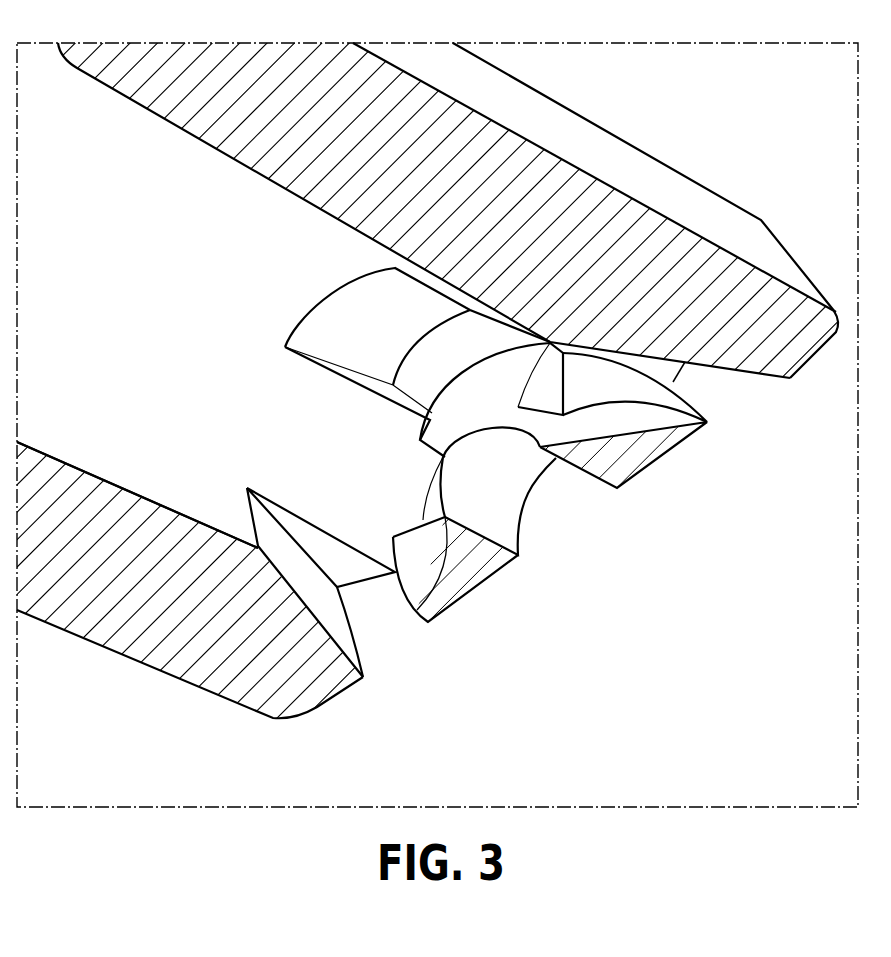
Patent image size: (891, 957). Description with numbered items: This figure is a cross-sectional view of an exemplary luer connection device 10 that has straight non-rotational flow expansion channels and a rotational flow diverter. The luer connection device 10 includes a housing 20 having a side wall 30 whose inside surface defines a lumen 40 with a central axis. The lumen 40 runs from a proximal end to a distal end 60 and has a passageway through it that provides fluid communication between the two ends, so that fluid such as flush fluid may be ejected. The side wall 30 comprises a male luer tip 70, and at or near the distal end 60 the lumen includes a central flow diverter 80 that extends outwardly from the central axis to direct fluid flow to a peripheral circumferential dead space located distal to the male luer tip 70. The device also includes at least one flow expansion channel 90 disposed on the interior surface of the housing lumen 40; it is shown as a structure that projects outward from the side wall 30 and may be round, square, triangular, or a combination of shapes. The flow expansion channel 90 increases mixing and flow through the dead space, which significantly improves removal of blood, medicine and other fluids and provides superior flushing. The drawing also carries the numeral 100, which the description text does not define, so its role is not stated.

The luer connection device 10 is at (783, 158).
The housing 20 is at (599, 147).
The side wall 30 is at (185, 632).
The lumen 40 is at (185, 468).
The distal end 60 is at (813, 358).
The male luer tip 70 is at (237, 703).
The central flow diverter 80 is at (463, 573).
The flow expansion channel 90 is at (355, 315).
The cutting blade 100 is at (648, 415).